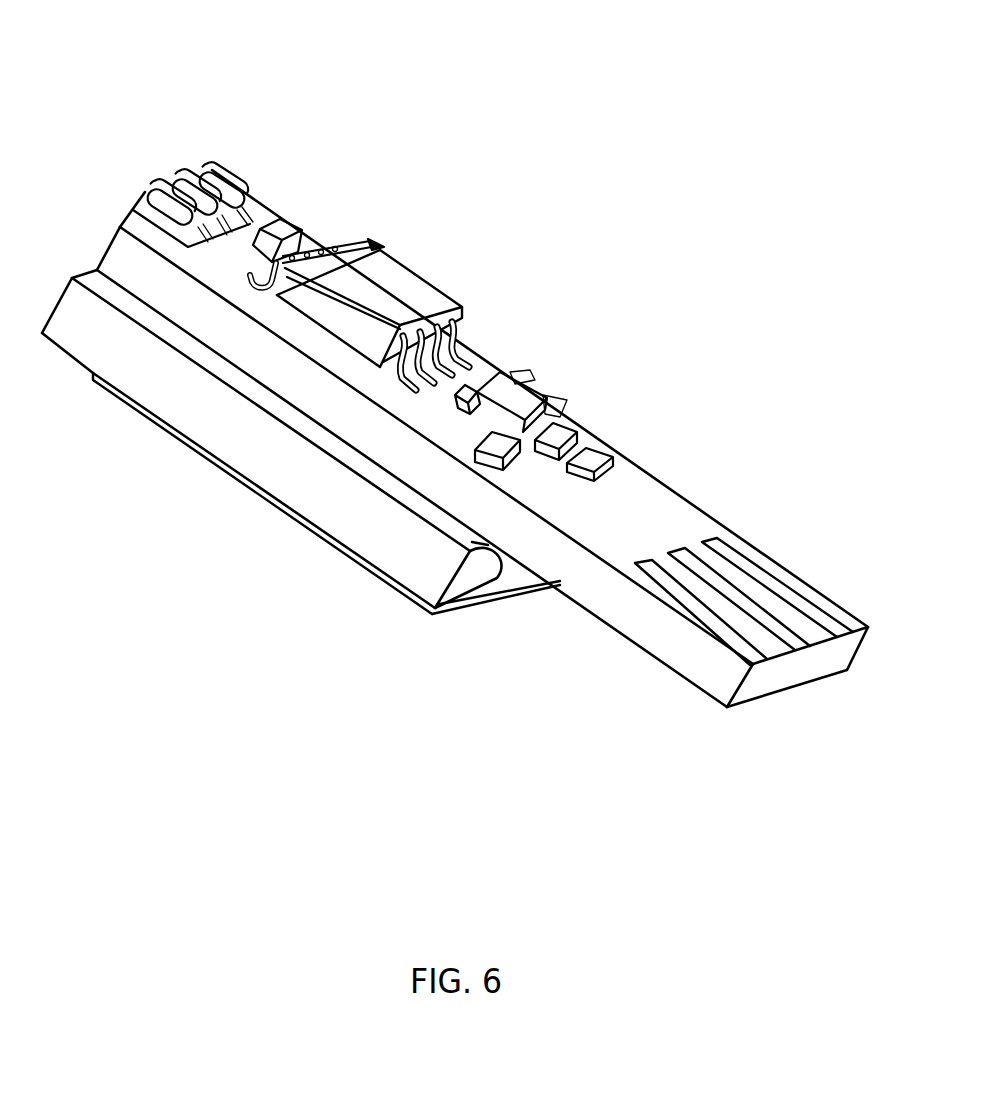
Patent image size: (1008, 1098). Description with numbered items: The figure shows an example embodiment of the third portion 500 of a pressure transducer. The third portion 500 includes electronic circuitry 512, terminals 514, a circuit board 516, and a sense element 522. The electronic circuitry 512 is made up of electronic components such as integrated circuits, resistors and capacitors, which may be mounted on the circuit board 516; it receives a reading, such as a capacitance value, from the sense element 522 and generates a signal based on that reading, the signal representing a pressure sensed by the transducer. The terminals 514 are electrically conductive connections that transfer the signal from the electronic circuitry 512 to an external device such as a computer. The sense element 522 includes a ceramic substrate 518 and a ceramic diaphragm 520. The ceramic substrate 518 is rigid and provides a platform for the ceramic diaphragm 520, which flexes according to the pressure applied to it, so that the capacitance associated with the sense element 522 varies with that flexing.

The third portion 500 is at (713, 73).
The electronic circuitry 512 is at (392, 292).
The terminals 514 is at (784, 594).
The circuit board 516 is at (669, 638).
The ceramic substrate 518 is at (370, 523).
The ceramic diaphragm 520 is at (167, 427).
The sense element 522 is at (423, 627).